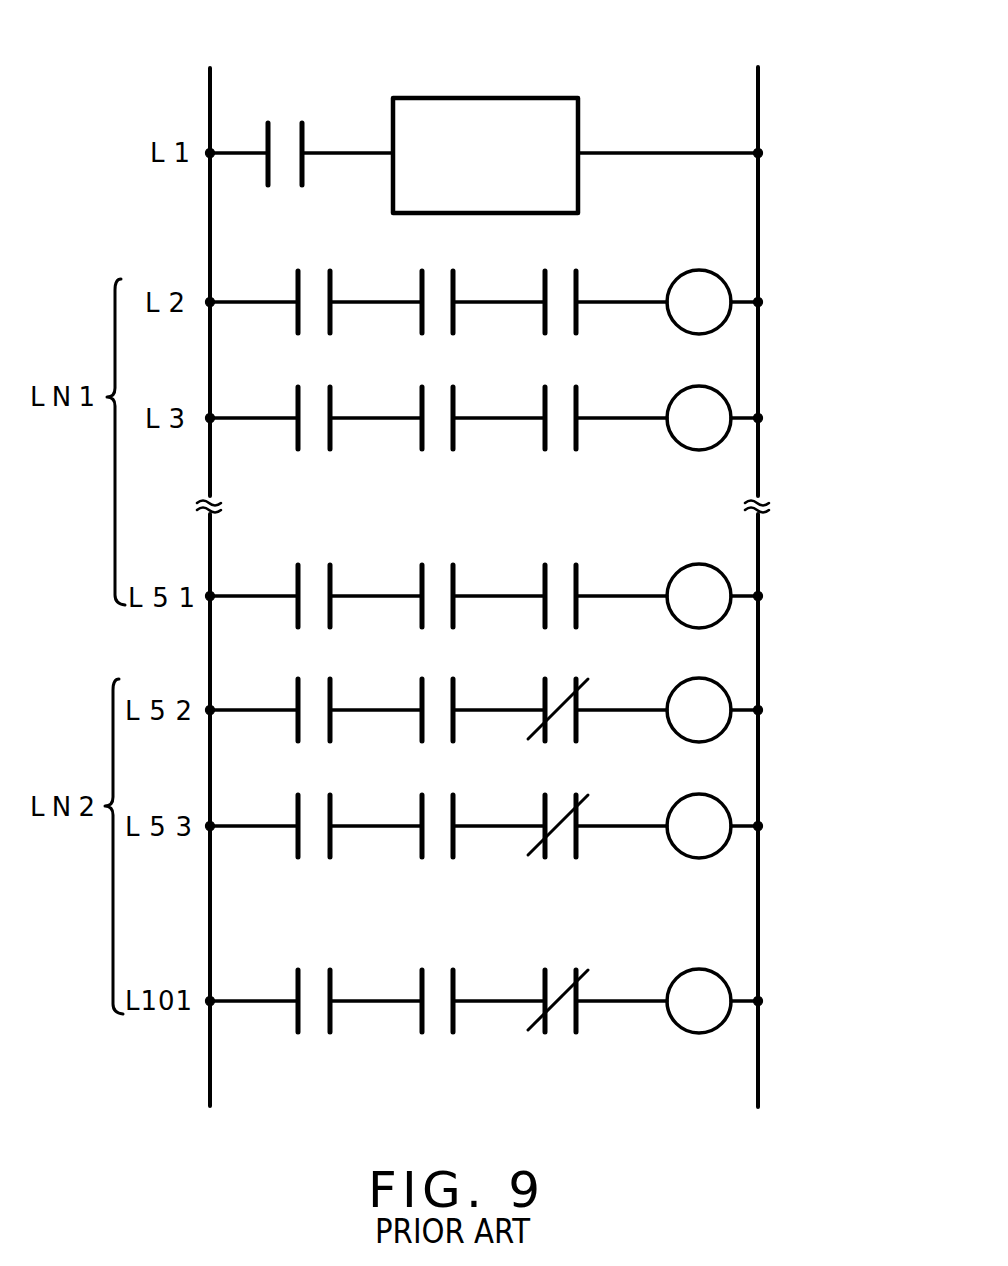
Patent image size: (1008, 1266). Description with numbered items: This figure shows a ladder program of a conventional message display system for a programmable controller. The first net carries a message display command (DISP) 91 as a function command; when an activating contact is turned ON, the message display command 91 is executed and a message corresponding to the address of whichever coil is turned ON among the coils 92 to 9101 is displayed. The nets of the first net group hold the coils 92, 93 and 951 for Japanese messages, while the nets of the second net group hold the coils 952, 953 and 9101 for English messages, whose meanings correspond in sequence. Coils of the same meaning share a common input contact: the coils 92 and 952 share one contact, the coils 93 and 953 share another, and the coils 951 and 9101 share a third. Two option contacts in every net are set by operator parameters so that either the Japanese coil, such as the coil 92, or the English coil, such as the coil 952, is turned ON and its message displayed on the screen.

The message display command (DISP) 91 is at (472, 98).
The coil 92 is at (725, 285).
The coil 93 is at (725, 401).
The coil 951 is at (725, 579).
The coil 952 is at (728, 693).
The coil 953 is at (728, 809).
The coil 9101 is at (728, 990).